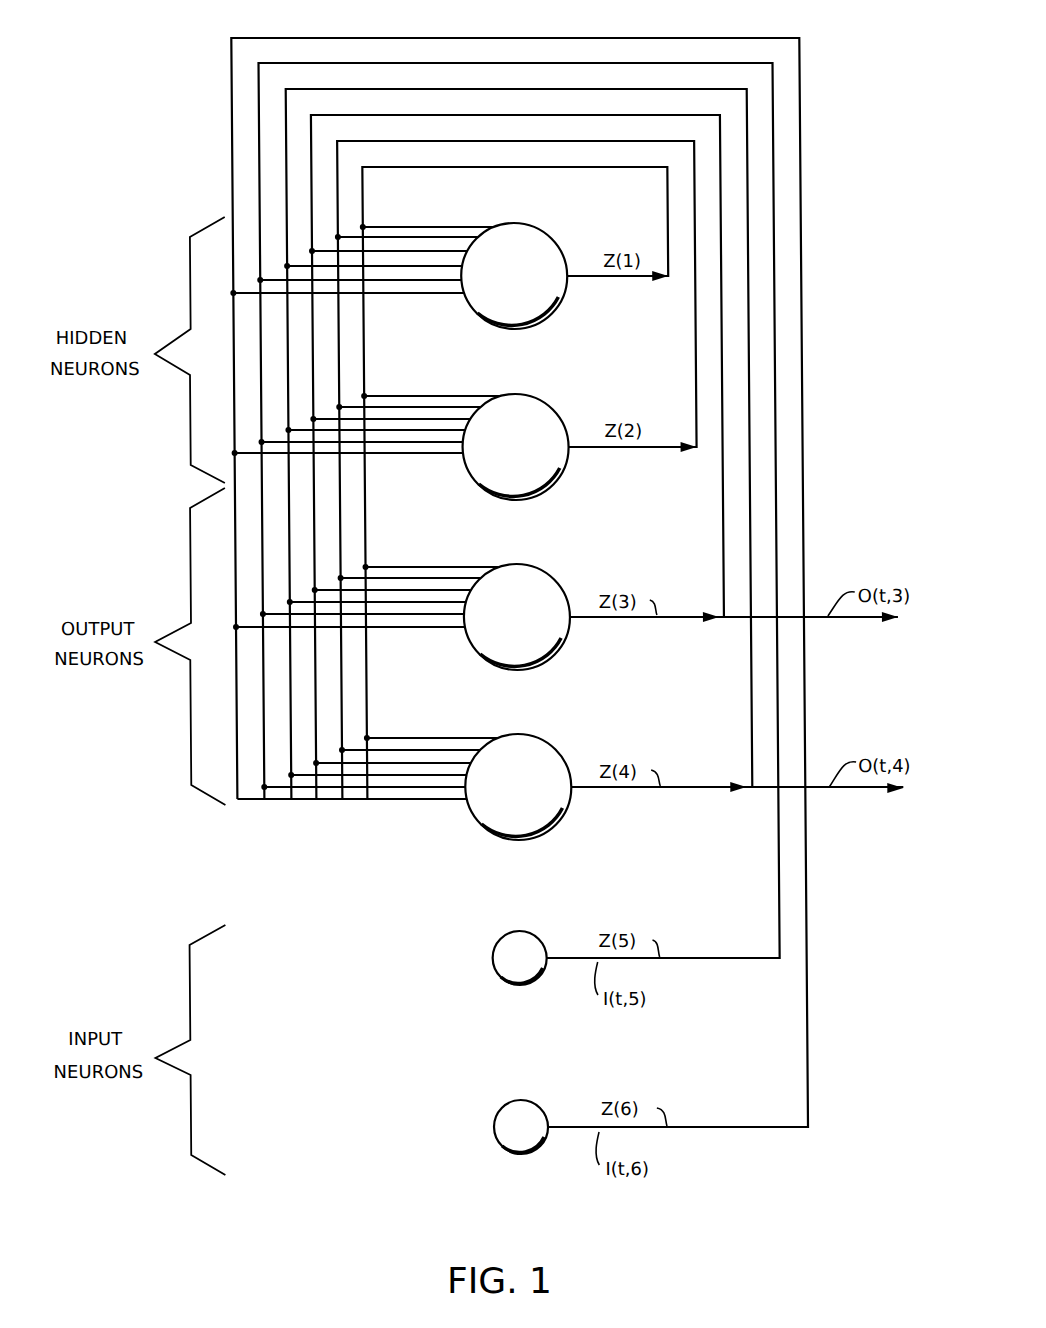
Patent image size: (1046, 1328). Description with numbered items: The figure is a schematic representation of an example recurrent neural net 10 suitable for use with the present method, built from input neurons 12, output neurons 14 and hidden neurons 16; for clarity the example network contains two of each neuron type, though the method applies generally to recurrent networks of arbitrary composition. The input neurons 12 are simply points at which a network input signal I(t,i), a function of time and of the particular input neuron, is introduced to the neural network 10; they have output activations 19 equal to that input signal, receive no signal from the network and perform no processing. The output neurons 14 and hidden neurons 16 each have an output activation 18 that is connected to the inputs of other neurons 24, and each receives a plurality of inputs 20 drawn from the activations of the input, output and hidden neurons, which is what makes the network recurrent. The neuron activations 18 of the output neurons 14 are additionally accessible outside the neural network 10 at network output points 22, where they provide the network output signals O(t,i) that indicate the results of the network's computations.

The recurrent neural net 10 is at (810, 43).
The input neurons 12 is at (525, 934).
The output neurons 14 is at (549, 572).
The hidden neurons 16 is at (536, 226).
The output activations 18 is at (572, 284).
The output activations 19 is at (551, 967).
The inputs 20 is at (447, 302).
The network output points 22 is at (842, 620).
The inputs of other neurons 24 is at (310, 251).